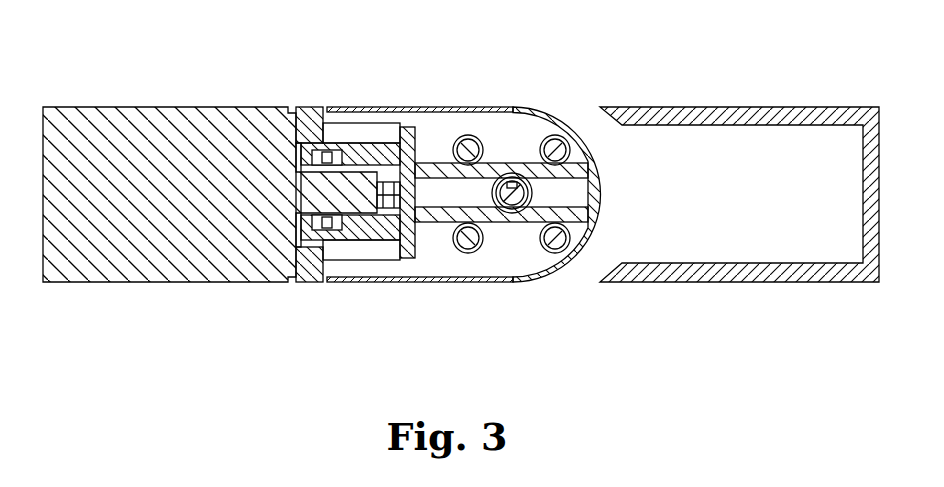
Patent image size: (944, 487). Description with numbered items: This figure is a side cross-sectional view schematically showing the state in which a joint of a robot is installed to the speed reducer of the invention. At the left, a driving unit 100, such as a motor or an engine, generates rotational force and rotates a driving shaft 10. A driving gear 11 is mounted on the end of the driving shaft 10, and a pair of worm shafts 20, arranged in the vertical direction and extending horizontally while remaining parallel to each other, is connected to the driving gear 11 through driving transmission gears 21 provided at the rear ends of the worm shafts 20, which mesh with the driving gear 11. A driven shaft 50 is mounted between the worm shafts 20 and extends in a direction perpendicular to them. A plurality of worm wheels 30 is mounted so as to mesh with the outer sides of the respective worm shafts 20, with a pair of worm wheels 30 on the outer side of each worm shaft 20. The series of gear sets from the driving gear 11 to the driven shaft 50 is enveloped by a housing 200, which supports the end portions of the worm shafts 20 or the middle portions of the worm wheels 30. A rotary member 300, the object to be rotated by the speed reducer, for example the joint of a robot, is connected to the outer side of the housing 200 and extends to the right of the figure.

The driving unit 100 is at (82, 115).
The driving shaft 10 is at (390, 197).
The driving gear 11 is at (393, 200).
The worm shaft 20 is at (442, 163).
The driving transmission gear 21 is at (387, 162).
The worm wheel 30 is at (549, 137).
The driven shaft 50 is at (511, 198).
The housing 200 is at (578, 112).
The rotary member 300 is at (825, 115).